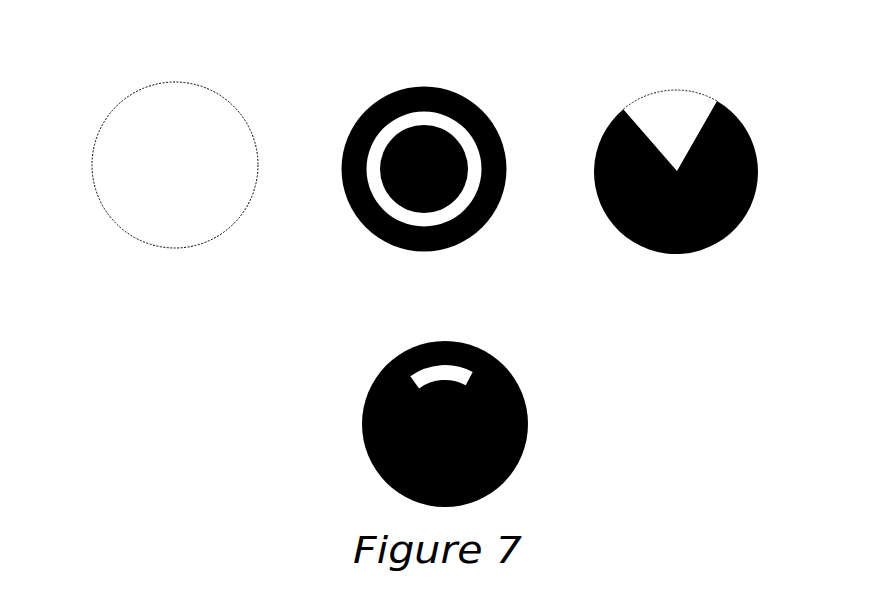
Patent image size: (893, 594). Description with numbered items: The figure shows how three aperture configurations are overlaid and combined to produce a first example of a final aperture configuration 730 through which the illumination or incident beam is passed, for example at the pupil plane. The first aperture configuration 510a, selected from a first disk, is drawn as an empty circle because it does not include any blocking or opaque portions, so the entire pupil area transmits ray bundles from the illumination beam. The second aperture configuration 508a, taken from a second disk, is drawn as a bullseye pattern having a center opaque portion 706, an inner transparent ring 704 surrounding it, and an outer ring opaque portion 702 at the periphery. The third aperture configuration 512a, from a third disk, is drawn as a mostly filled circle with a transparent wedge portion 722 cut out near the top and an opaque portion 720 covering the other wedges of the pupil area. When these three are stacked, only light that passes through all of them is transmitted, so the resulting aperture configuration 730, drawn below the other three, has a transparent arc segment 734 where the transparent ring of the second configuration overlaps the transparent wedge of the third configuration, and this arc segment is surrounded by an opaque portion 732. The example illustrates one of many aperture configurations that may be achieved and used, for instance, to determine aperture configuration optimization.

The first aperture configuration 510a is at (104, 100).
The second aperture configuration 508a is at (397, 181).
The outer ring opaque portion 702 is at (405, 250).
The inner transparent ring 704 is at (375, 203).
The center opaque portion 706 is at (437, 174).
The third aperture configuration 512a is at (655, 158).
The opaque portion 720 is at (622, 233).
The transparent wedge portion 722 is at (672, 102).
The final aperture configuration 730 is at (465, 424).
The opaque portion 732 is at (525, 447).
The transparent arc segment 734 is at (473, 372).